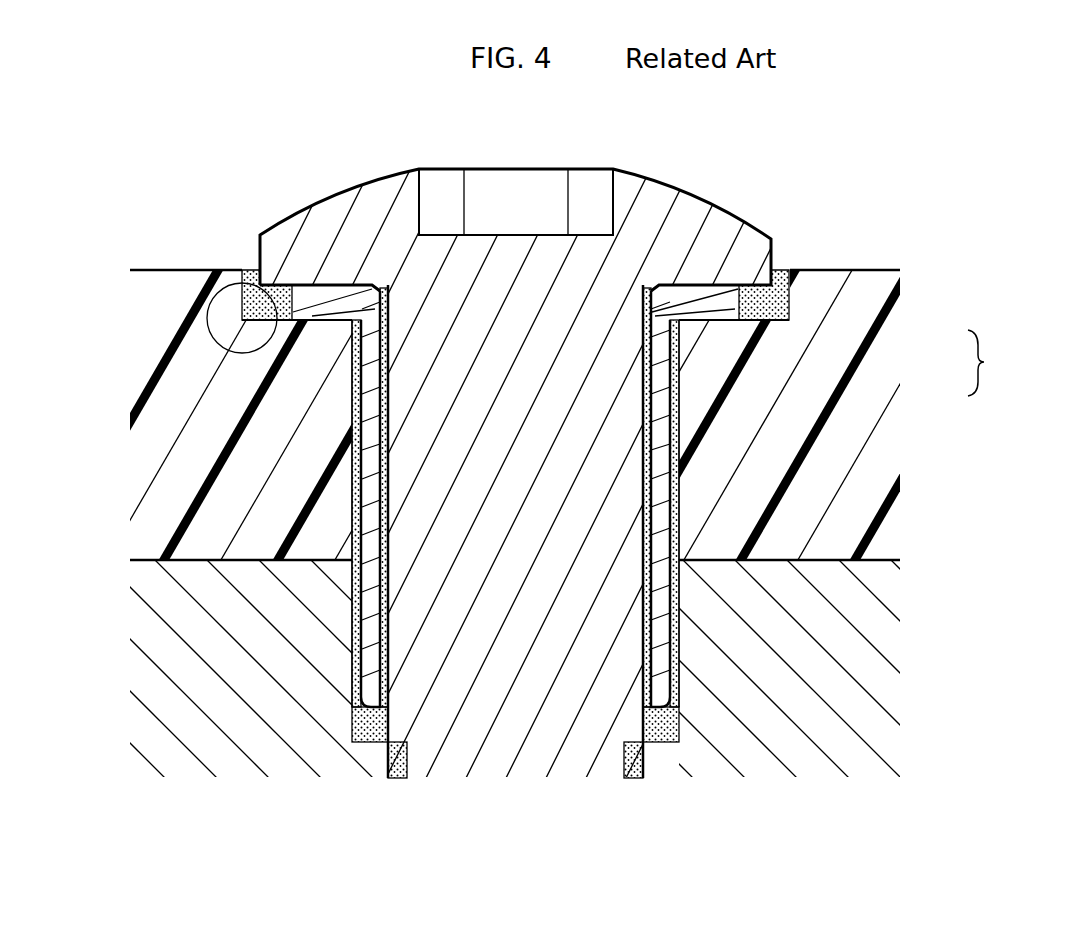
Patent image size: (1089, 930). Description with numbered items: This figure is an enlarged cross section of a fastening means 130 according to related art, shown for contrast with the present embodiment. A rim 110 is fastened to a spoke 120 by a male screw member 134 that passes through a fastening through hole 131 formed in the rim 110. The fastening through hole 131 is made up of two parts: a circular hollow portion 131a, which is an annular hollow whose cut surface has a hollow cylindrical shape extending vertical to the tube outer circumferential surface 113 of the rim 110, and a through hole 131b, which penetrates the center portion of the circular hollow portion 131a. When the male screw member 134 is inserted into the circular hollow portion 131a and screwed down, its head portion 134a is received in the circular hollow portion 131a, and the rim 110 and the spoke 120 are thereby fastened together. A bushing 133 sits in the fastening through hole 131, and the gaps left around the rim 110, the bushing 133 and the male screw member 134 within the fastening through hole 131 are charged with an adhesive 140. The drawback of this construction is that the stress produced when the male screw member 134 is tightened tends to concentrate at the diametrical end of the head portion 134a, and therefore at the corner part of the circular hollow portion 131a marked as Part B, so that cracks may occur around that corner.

The fastening means 130 is at (515, 457).
The male screw member 134 is at (470, 456).
The head portion 134a is at (657, 207).
The fastening through hole 131 is at (636, 488).
The circular hollow portion 131a is at (797, 295).
The through hole 131b is at (681, 378).
The bushing 133 is at (348, 609).
The adhesive 140 is at (372, 728).
The rim 110 is at (905, 458).
The spoke 120 is at (905, 650).
The tube outer circumferential surface 113 is at (171, 268).
The Part B is at (232, 280).